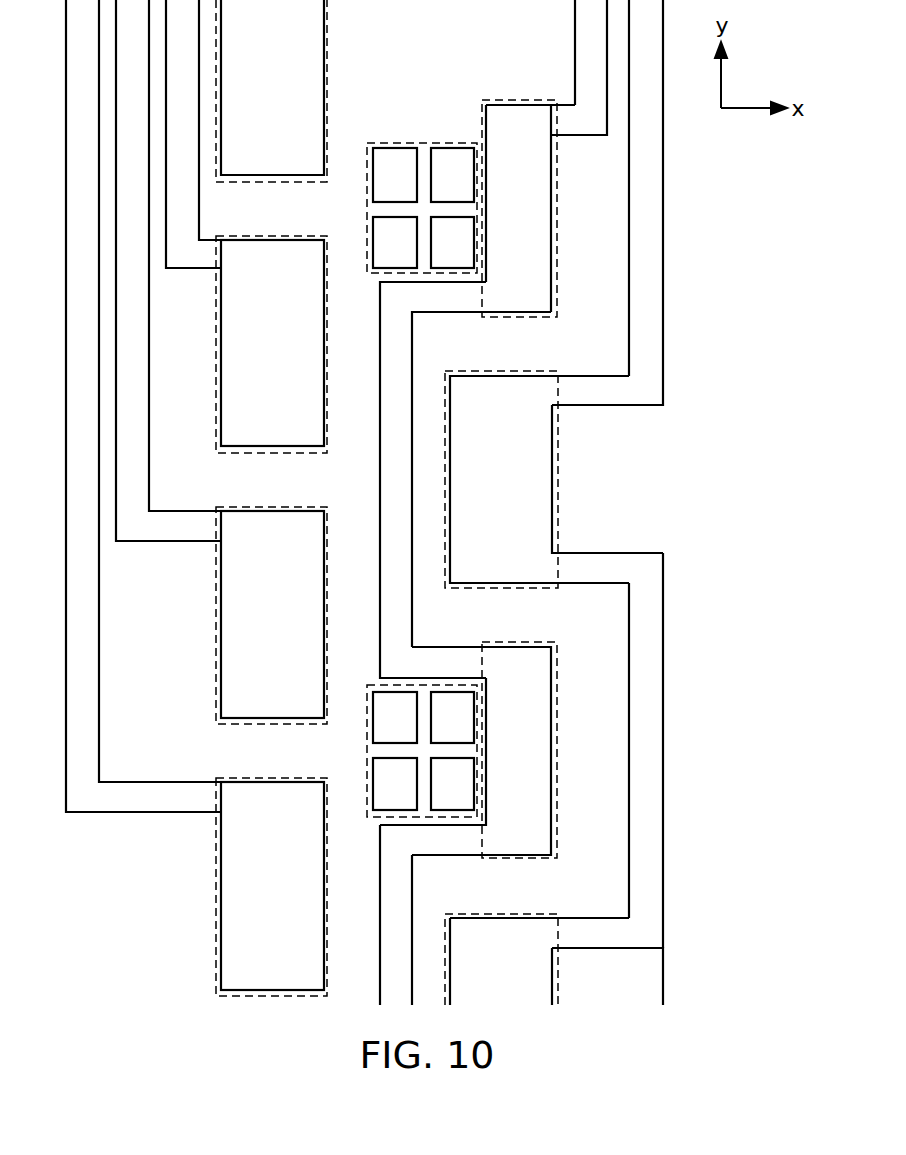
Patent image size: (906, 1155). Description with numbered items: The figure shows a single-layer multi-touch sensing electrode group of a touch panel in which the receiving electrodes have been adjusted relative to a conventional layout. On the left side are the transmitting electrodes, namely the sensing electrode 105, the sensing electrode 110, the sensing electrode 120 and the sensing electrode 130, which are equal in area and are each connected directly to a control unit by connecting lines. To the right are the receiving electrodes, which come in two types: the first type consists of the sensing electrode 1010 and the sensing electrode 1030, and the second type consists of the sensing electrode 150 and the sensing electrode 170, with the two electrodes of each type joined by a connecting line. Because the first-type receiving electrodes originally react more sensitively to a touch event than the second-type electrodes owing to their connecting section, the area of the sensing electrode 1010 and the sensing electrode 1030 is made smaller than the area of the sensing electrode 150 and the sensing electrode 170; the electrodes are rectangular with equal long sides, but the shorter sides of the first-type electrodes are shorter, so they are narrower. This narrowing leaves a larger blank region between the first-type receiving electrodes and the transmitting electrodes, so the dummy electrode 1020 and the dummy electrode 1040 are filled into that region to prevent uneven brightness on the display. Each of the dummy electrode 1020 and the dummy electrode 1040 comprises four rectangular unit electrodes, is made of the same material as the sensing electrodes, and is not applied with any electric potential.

The sensing electrode 105 is at (327, 72).
The sensing electrode 110 is at (290, 235).
The sensing electrode 120 is at (290, 506).
The sensing electrode 130 is at (290, 777).
The sensing electrode 1010 is at (527, 99).
The sensing electrode 150 is at (524, 370).
The sensing electrode 1030 is at (527, 641).
The sensing electrode 170 is at (524, 913).
The dummy electrode 1020 is at (435, 141).
The dummy electrode 1040 is at (373, 820).